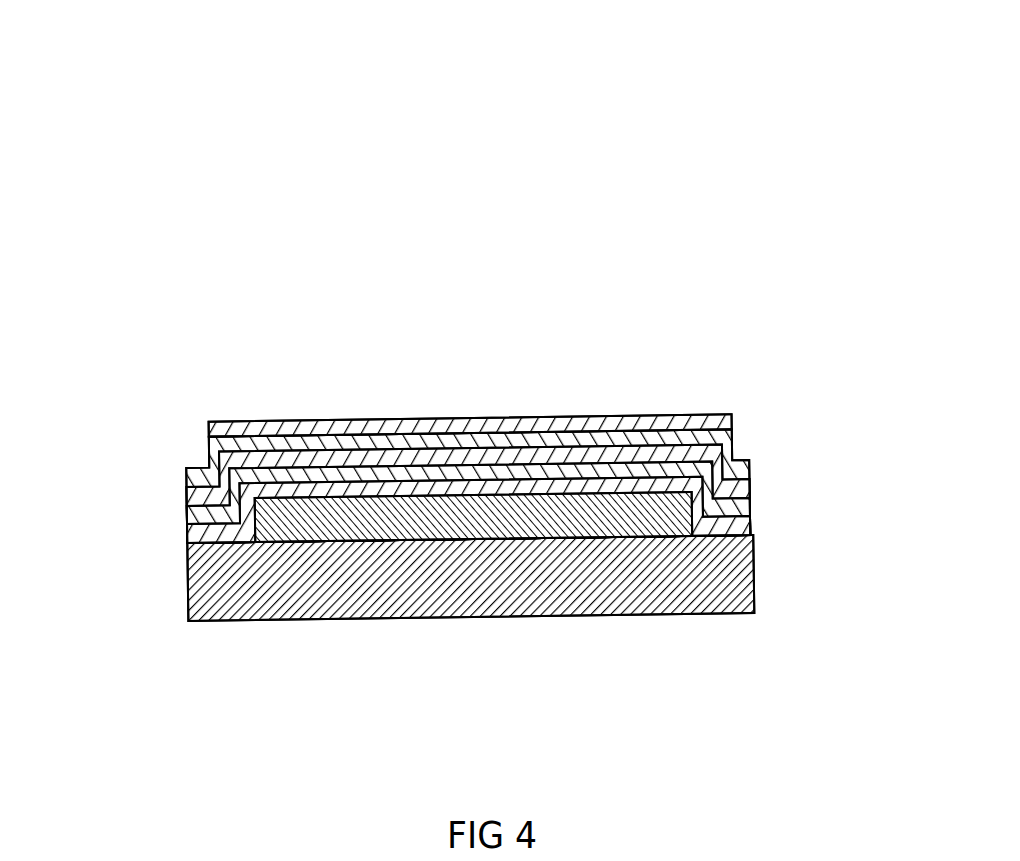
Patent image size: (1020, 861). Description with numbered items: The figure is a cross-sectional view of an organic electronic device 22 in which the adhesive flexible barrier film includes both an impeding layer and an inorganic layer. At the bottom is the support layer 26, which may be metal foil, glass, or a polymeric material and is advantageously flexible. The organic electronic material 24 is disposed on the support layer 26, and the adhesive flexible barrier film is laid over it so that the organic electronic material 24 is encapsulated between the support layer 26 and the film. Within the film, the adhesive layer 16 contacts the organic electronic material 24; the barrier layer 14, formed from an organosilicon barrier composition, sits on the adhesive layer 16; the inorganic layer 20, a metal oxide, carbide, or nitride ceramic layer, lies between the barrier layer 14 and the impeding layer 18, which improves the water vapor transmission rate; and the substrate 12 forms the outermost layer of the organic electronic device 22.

The substrate 12 is at (733, 415).
The barrier layer 14 is at (185, 512).
The adhesive layer 16 is at (752, 535).
The impeding layer 18 is at (185, 472).
The inorganic layer 20 is at (751, 478).
The organic electronic device 22 is at (479, 315).
The organic electronic material 24 is at (527, 517).
The support layer 26 is at (185, 587).